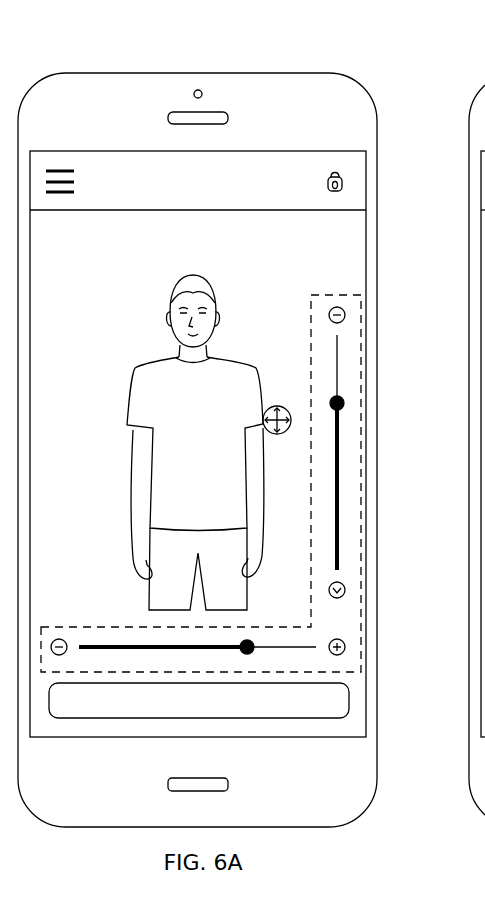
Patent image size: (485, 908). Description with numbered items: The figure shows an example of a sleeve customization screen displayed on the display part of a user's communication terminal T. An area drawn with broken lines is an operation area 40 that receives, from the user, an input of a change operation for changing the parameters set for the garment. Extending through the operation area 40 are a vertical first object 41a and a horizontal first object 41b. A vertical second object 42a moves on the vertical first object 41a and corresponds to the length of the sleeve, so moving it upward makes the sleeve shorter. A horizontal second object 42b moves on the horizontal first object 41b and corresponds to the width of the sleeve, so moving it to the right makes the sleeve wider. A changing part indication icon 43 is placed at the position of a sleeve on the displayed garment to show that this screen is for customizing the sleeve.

The communication terminal T is at (313, 74).
The operation area 40 is at (41, 628).
The vertical first object 41a is at (340, 463).
The vertical second object 42a is at (344, 402).
The horizontal first object 41b is at (97, 647).
The horizontal second object 42b is at (252, 641).
The changing part indication icon 43 is at (273, 407).